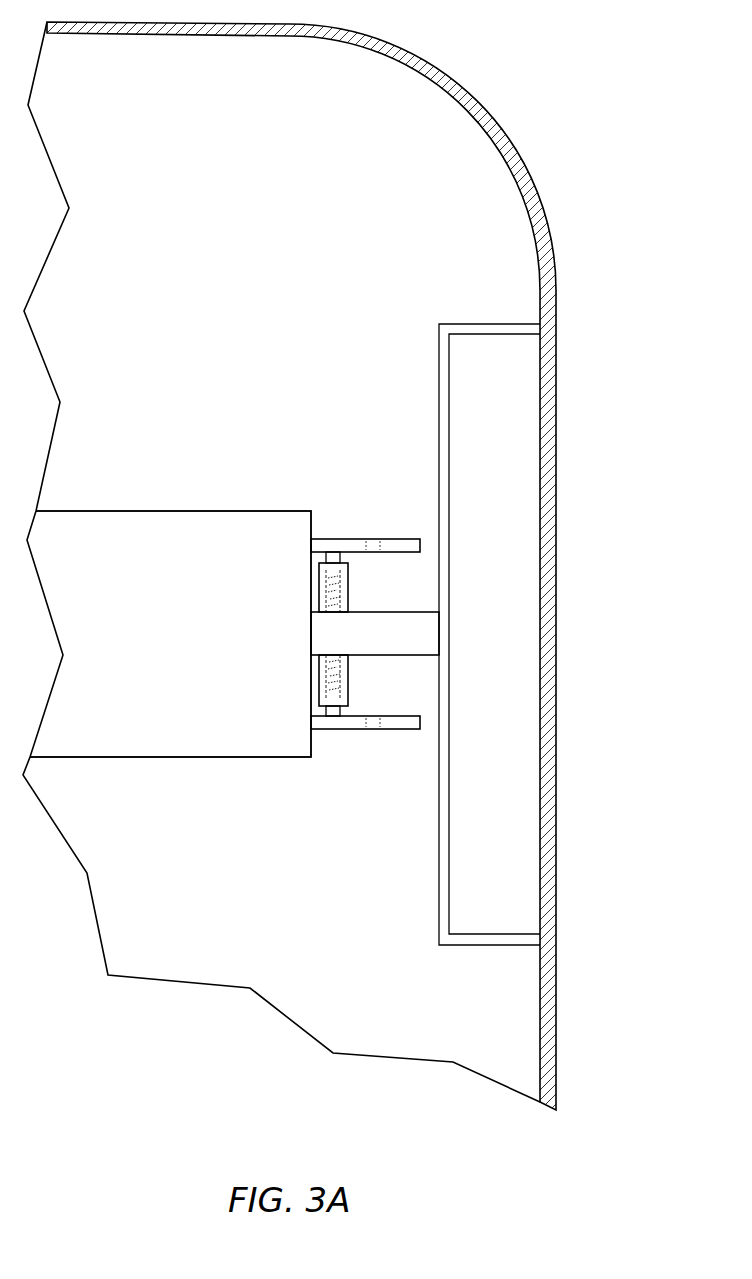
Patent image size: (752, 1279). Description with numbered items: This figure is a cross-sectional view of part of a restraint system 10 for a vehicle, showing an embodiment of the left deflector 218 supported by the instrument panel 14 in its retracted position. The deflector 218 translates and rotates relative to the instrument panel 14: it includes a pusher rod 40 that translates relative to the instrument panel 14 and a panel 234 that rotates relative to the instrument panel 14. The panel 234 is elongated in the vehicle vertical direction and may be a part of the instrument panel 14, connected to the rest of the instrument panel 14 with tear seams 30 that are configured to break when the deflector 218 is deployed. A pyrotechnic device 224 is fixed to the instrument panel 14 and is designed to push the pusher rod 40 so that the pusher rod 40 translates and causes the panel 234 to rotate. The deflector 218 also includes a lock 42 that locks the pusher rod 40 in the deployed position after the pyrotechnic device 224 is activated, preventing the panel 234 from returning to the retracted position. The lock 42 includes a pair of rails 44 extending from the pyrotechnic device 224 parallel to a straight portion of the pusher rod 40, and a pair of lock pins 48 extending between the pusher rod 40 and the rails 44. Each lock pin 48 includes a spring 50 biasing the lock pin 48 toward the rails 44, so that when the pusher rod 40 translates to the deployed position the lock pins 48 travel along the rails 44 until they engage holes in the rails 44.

The restraint system 10 is at (612, 58).
The instrument panel 14 is at (435, 67).
The tear seams 30 is at (545, 326).
The pusher rod 40 is at (439, 386).
The lock 42 is at (343, 518).
The rails 44 is at (400, 539).
The lock pins 48 is at (322, 580).
The spring 50 is at (322, 603).
The left deflector 218 is at (194, 478).
The pyrotechnic device 224 is at (183, 757).
The panel 234 is at (557, 513).